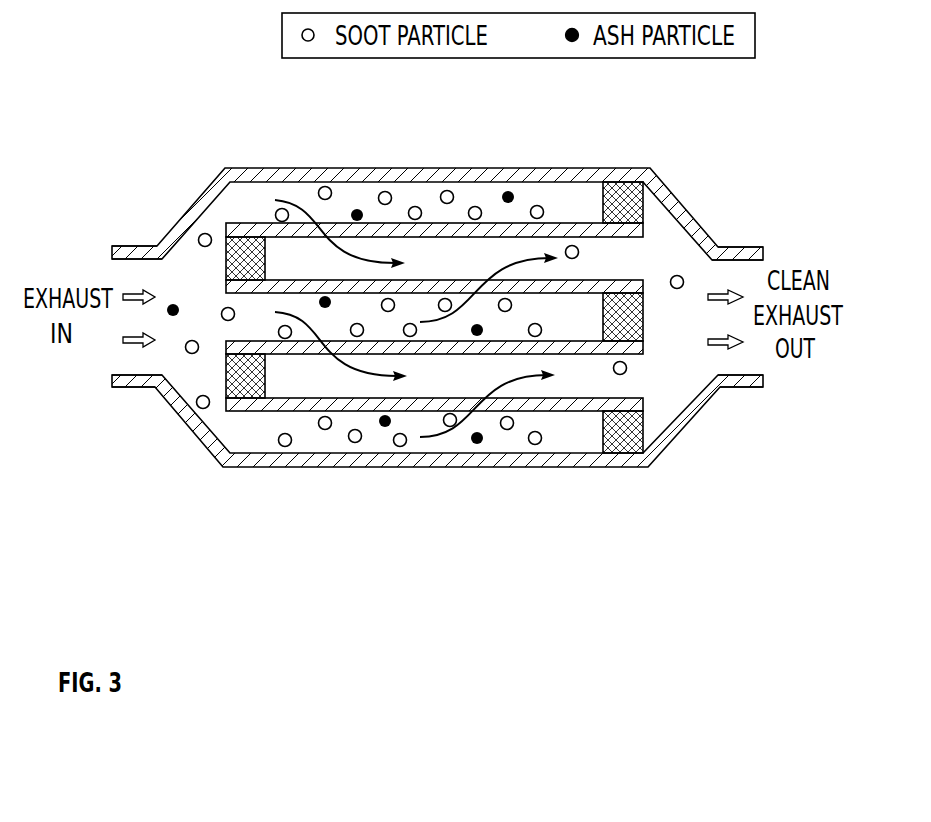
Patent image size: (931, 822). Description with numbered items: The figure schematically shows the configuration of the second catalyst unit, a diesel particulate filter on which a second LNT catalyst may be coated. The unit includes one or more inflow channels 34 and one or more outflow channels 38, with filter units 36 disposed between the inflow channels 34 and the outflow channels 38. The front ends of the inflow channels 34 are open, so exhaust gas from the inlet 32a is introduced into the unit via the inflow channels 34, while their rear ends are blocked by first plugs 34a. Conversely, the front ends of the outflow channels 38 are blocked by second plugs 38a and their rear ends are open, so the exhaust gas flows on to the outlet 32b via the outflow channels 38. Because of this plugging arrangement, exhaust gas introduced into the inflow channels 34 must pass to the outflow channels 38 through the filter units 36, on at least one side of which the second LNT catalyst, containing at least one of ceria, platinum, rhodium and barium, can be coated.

The inflow channel 34 is at (228, 200).
The first plug 34a is at (619, 192).
The filter unit 36 is at (568, 230).
The outflow channel 38 is at (588, 405).
The second plug 38a is at (250, 385).
The inlet 32a is at (130, 363).
The outlet 32b is at (743, 367).